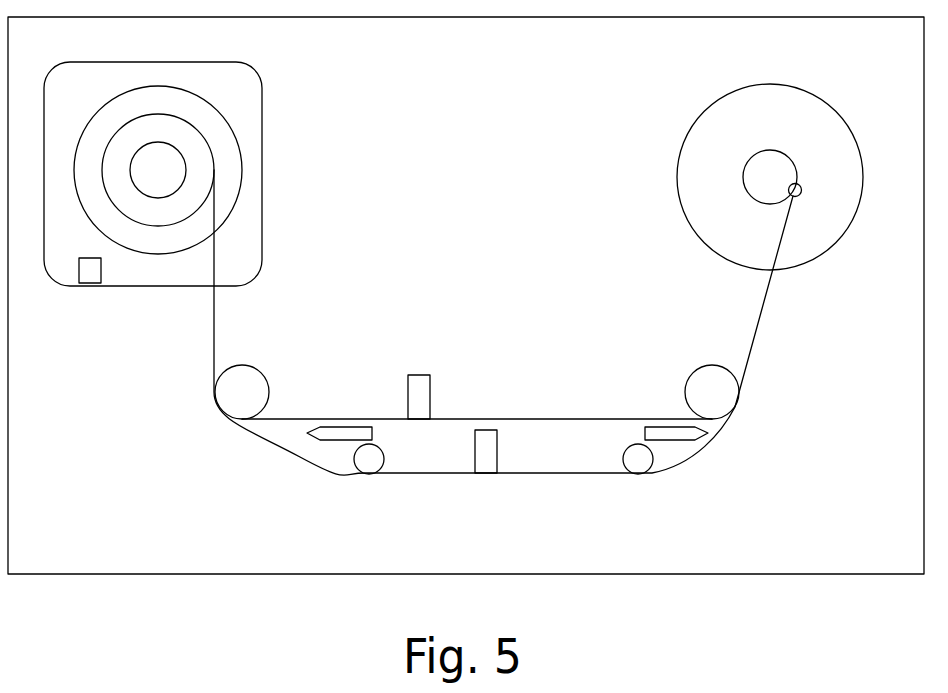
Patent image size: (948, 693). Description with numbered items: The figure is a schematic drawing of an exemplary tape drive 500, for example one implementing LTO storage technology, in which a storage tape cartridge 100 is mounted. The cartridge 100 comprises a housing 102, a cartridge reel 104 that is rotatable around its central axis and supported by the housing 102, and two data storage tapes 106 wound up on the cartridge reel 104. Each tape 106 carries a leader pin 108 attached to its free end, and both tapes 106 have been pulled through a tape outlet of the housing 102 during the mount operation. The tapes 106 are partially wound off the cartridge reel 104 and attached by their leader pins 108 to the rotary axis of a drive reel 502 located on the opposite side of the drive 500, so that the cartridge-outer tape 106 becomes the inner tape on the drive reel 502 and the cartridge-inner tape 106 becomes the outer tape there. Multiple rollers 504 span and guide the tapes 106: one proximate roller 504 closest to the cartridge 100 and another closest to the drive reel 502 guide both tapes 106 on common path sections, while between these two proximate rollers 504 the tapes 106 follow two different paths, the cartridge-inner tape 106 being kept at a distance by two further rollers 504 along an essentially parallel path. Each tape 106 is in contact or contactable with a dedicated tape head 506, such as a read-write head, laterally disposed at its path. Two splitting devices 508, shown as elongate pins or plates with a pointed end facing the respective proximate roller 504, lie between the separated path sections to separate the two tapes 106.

The storage tape cartridge 100 is at (272, 207).
The housing 102 is at (245, 132).
The cartridge reel 104 is at (196, 115).
The data storage tape 106 is at (213, 318).
The leader pin 108 is at (801, 190).
The tape drive 500 is at (513, 104).
The drive reel 502 is at (712, 128).
The roller 504 is at (242, 392).
The tape head 506 is at (418, 390).
The splitting device 508 is at (337, 427).